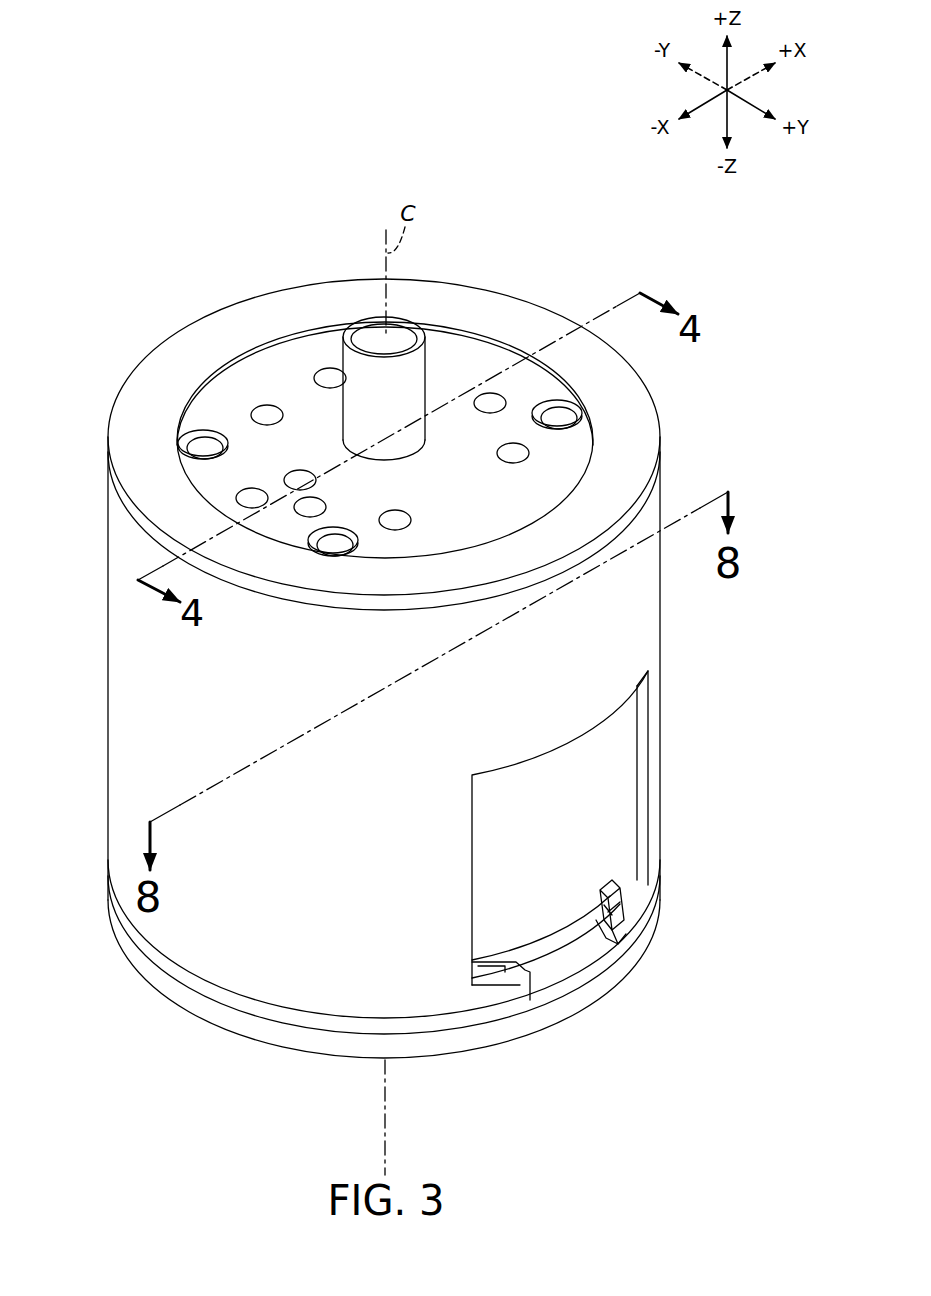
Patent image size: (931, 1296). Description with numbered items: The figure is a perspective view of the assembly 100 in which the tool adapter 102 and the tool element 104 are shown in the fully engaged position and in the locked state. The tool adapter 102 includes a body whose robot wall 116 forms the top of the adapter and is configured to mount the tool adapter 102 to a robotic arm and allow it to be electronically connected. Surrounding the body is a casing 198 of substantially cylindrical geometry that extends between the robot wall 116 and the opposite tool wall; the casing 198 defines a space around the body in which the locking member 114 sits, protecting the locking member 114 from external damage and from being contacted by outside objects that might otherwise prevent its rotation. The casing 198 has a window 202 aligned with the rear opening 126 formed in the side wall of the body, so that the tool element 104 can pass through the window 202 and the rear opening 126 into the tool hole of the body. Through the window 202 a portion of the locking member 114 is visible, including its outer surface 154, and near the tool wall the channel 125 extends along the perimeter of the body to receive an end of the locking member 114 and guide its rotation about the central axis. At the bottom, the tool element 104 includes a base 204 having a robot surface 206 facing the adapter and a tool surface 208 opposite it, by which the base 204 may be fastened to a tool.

The rotary actuator assembly 100 is at (141, 244).
The tool adapter 102 is at (690, 387).
The tool element 104 is at (565, 1047).
The locking member 114 is at (607, 868).
The robot wall 116 is at (520, 312).
The channel 125 is at (600, 912).
The rear opening 126 is at (491, 812).
The outer surface 154 is at (620, 714).
The casing 198 is at (645, 640).
The window 202 is at (642, 821).
The base 204 is at (176, 1023).
The robot surface 206 is at (574, 973).
The tool surface 208 is at (508, 1046).